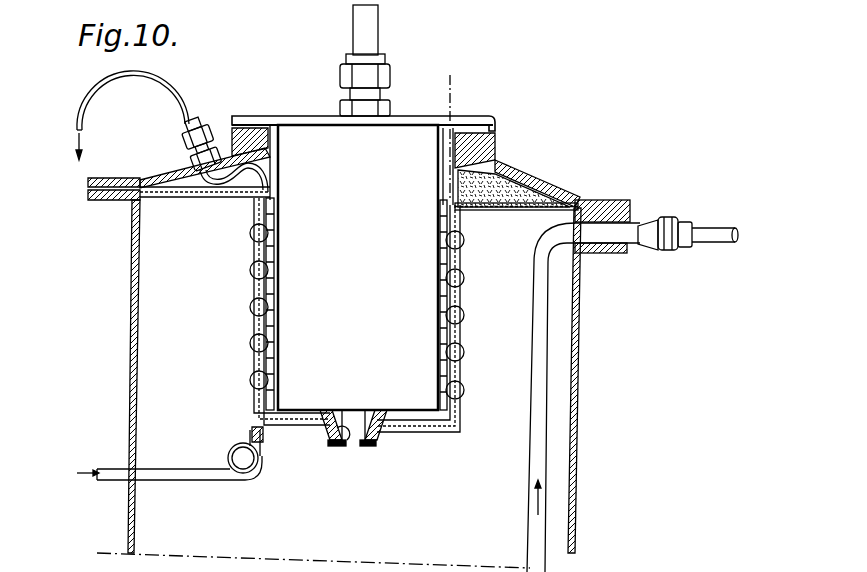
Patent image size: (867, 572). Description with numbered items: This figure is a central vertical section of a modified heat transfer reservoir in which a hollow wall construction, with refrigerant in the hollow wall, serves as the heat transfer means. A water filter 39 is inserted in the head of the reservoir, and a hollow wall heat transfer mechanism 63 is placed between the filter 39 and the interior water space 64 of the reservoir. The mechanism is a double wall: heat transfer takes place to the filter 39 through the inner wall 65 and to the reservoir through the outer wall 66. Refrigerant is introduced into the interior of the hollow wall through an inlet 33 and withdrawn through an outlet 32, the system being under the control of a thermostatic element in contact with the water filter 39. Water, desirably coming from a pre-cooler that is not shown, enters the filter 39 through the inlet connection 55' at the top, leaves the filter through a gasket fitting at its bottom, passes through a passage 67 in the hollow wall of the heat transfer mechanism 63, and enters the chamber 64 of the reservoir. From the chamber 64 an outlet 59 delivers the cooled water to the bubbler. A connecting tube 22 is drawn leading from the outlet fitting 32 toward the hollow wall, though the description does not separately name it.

The connecting tube 22 is at (222, 193).
The outlet 32 is at (194, 116).
The inlet 33 is at (169, 465).
The filter 39 is at (372, 195).
The inlet connection 55' is at (383, 60).
The outlet to the bubbler 59 is at (708, 232).
The hollow wall heat transfer mechanism 63 is at (249, 305).
The interior water space 64 is at (364, 499).
The inner wall 65 is at (470, 304).
The outer wall 66 is at (470, 358).
The passage 67 is at (338, 445).